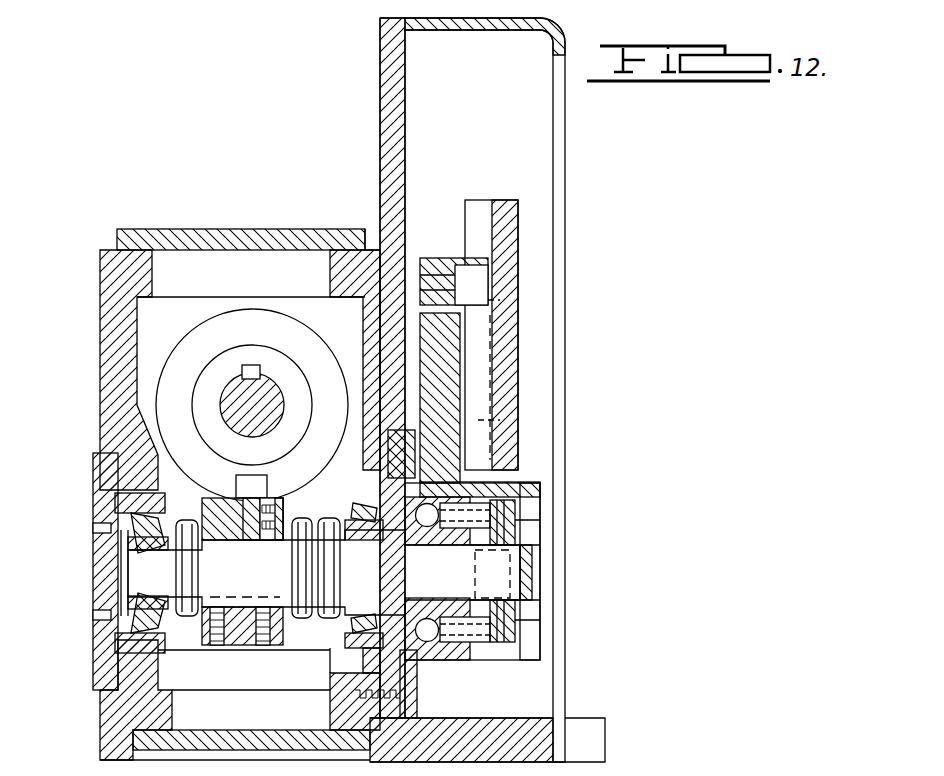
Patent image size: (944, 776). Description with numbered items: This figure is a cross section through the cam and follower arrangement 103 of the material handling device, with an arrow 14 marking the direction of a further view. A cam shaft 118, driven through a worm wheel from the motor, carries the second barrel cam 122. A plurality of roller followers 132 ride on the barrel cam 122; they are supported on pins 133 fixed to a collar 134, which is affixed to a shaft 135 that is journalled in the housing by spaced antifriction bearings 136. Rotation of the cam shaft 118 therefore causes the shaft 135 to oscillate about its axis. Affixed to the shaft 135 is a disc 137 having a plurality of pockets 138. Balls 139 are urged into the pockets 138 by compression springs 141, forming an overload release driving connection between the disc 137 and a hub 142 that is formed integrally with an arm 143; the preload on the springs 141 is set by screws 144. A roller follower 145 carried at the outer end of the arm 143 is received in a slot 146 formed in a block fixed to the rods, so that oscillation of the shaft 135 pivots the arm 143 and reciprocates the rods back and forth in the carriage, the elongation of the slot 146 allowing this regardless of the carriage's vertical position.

The drive assembly 14 is at (653, 385).
The cam and follower arrangement 103 is at (290, 283).
The cam shaft 118 is at (237, 392).
The second barrel cam 122 is at (197, 328).
The roller followers 132 is at (248, 475).
The pins 133 is at (165, 492).
The collar 134 is at (206, 642).
The shaft 135 is at (215, 568).
The antifriction bearings 136 is at (140, 620).
The disc 137 is at (410, 645).
The pockets 138 is at (443, 500).
The balls 139 is at (483, 510).
The compression springs 141 is at (462, 522).
The hub 142 is at (488, 640).
The arm 143 is at (452, 362).
The screws 144 is at (480, 510).
The roller follower 145 is at (478, 290).
The slot 146 is at (492, 222).